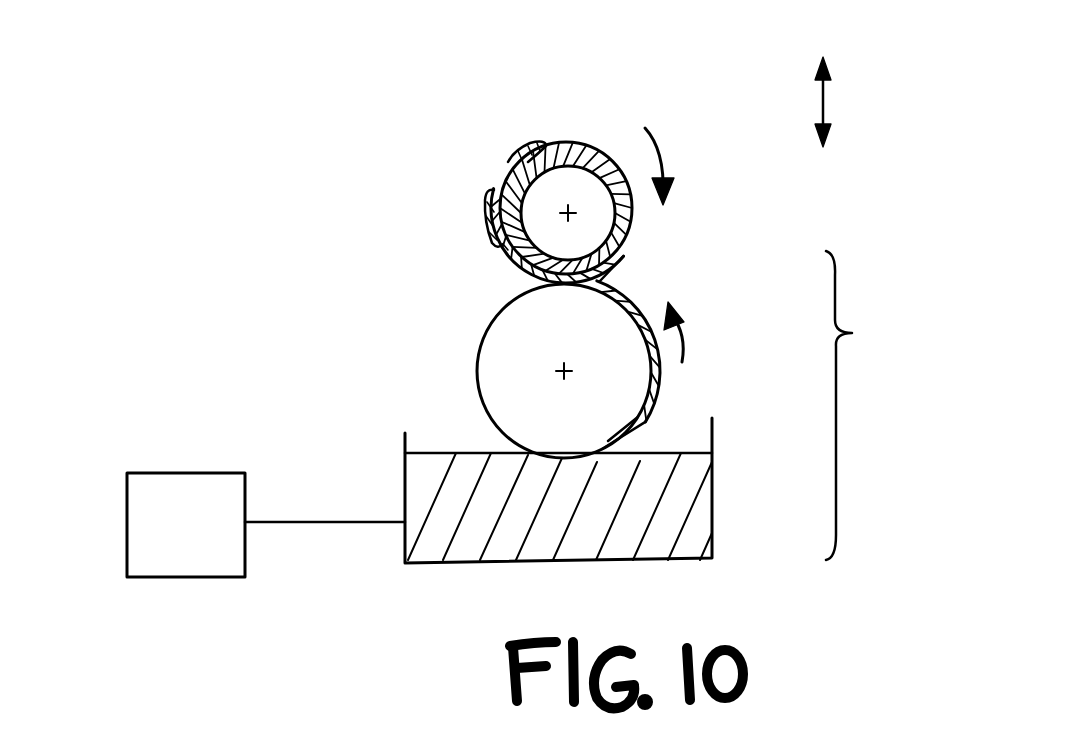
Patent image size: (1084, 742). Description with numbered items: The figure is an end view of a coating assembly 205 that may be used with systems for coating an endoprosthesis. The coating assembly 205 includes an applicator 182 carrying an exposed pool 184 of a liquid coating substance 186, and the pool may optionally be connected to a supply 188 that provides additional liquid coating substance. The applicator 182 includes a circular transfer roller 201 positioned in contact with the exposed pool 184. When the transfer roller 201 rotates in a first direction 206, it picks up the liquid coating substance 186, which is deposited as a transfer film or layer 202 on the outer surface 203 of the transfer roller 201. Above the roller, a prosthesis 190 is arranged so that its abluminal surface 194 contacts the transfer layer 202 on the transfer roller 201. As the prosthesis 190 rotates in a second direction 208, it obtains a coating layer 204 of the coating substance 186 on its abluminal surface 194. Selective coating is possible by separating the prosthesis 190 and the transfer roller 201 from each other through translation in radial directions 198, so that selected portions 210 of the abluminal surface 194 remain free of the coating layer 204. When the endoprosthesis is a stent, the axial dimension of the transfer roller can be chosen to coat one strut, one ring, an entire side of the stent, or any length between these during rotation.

The applicator 182 is at (877, 405).
The exposed pool 184 is at (435, 453).
The liquid coating substance 186 is at (680, 518).
The supply 188 is at (180, 577).
The prosthesis 190 is at (602, 155).
The abluminal surface 194 is at (573, 142).
The radial directions 198 is at (824, 102).
The circular transfer roller 201 is at (478, 367).
The transfer film or layer 202 is at (640, 295).
The outer surface of the transfer roller 203 is at (483, 330).
The coating layer 204 is at (520, 135).
The coating assembly 205 is at (283, 152).
The first direction 206 is at (685, 337).
The second direction 208 is at (663, 146).
The selected portions 210 is at (505, 172).